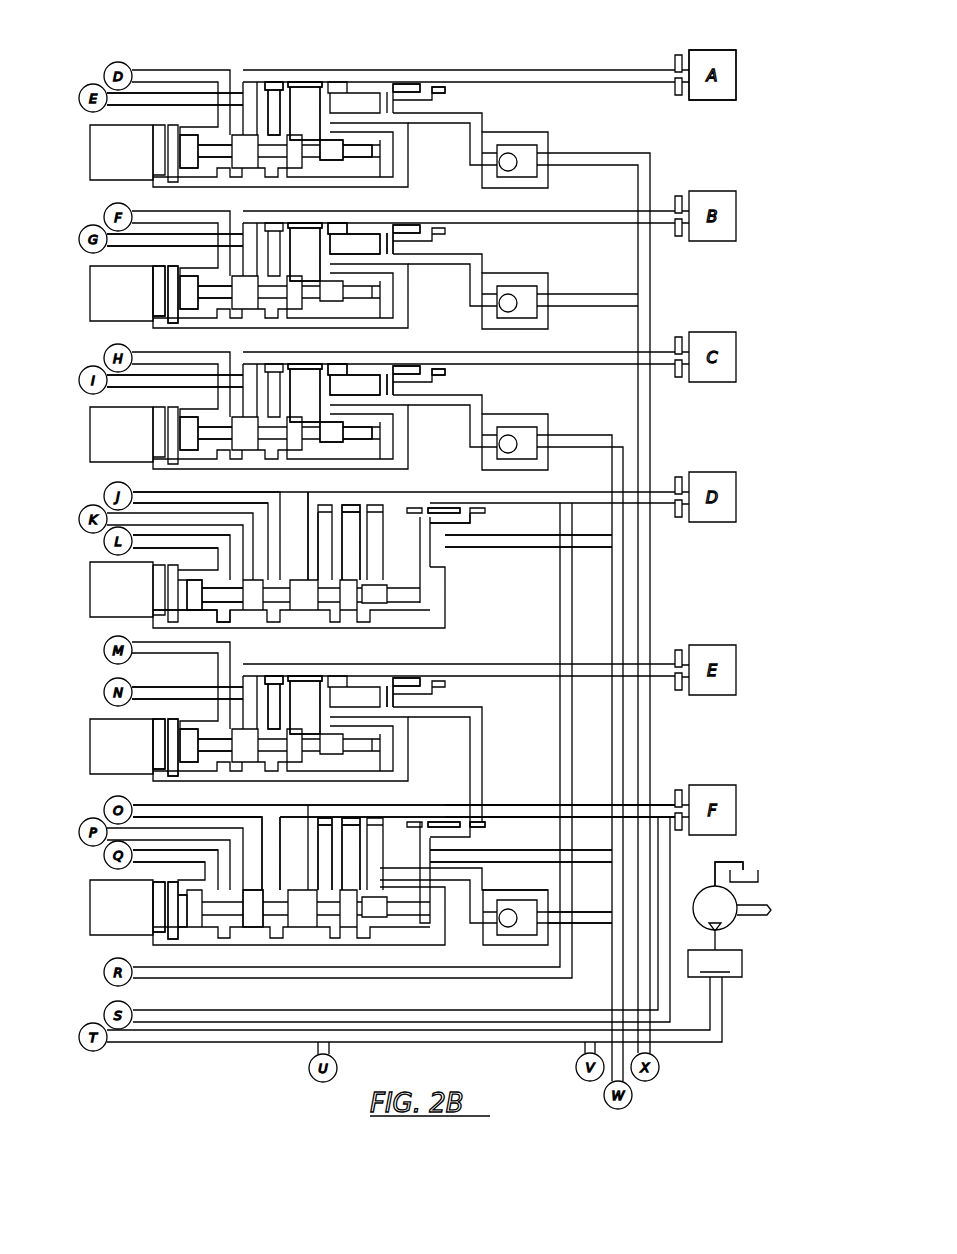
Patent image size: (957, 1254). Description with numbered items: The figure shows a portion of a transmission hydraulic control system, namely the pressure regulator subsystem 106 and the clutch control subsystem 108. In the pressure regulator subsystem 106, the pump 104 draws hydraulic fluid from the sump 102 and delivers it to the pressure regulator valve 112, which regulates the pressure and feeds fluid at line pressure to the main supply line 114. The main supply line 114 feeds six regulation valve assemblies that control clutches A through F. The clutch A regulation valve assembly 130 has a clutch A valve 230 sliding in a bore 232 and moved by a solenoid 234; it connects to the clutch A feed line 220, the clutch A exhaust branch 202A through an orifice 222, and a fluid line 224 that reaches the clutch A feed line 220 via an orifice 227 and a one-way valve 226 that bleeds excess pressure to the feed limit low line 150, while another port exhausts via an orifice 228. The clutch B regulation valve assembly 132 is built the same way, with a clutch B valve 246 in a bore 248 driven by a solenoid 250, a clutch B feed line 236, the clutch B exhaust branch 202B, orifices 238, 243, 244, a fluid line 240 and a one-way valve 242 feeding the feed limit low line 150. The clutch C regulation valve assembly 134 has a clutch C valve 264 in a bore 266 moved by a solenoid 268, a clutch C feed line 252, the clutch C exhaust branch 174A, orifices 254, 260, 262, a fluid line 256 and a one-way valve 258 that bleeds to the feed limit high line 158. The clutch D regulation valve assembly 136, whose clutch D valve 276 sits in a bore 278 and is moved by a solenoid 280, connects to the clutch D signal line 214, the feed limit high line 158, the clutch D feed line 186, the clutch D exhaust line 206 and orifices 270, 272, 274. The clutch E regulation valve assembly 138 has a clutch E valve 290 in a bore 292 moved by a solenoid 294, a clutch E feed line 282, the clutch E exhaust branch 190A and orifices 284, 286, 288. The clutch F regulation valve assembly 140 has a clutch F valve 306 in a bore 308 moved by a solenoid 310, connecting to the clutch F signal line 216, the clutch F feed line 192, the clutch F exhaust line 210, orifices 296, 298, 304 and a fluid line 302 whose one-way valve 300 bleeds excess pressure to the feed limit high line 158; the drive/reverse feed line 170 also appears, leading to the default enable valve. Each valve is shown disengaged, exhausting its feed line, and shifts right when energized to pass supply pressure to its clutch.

The sump 102 is at (762, 876).
The pump 104 is at (735, 928).
The pressure regulator subsystem 106 is at (755, 833).
The clutch control subsystem 108 is at (503, 50).
The pressure regulator valve 112 is at (715, 963).
The main supply line 114 is at (525, 1042).
The clutch A regulation valve assembly 130 is at (410, 155).
The clutch B regulation valve assembly 132 is at (410, 296).
The clutch C regulation valve assembly 134 is at (410, 448).
The clutch D regulation valve assembly 136 is at (465, 603).
The clutch E regulation valve assembly 138 is at (430, 758).
The clutch F regulation valve assembly 140 is at (95, 945).
The feed limit low line 150 is at (655, 415).
The feed limit high line 158 is at (655, 595).
The drive/reverse feed line 170 is at (205, 803).
The clutch C exhaust branch 174A is at (105, 389).
The clutch D feed line 186 is at (475, 492).
The clutch E exhaust branch 190A is at (160, 690).
The clutch F feed line 192 is at (515, 805).
The clutch A exhaust branch 202A is at (164, 92).
The clutch B exhaust branch 202B is at (105, 248).
The clutch D exhaust line 206 is at (165, 492).
The clutch F exhaust line 210 is at (205, 810).
The clutch D signal line 214 is at (150, 545).
The clutch F signal line 216 is at (150, 858).
The clutch A feed line 220 is at (478, 68).
The orifice 222 is at (272, 85).
The fluid line 224 is at (492, 113).
The one-way valve 226 is at (560, 140).
The orifice 227 is at (300, 92).
The orifice 228 is at (405, 85).
The clutch A valve 230 is at (205, 145).
The bore 232 is at (320, 163).
The solenoid 234 is at (105, 152).
The clutch B feed line 236 is at (553, 207).
The orifice 238 is at (300, 228).
The fluid line 240 is at (492, 254).
The one-way valve 242 is at (560, 281).
The orifice 243 is at (340, 235).
The orifice 244 is at (410, 210).
The clutch B valve 246 is at (205, 286).
The bore 248 is at (200, 305).
The solenoid 250 is at (105, 293).
The clutch C feed line 252 is at (553, 348).
The orifice 254 is at (300, 369).
The fluid line 256 is at (492, 395).
The one-way valve 258 is at (560, 422).
The orifice 260 is at (340, 372).
The orifice 262 is at (405, 352).
The clutch C valve 264 is at (205, 427).
The bore 266 is at (350, 430).
The solenoid 268 is at (105, 434).
The orifice 270 is at (310, 505).
The orifice 272 is at (348, 505).
The orifice 274 is at (448, 520).
The clutch D valve 276 is at (215, 607).
The bore 278 is at (190, 600).
The solenoid 280 is at (105, 594).
The clutch E feed line 282 is at (459, 653).
The orifice 284 is at (272, 684).
The orifice 286 is at (330, 684).
The orifice 288 is at (395, 678).
The clutch E valve 290 is at (208, 775).
The bore 292 is at (195, 750).
The solenoid 294 is at (105, 743).
The orifice 296 is at (325, 818).
The orifice 298 is at (388, 806).
The one-way valve 300 is at (548, 899).
The fluid line 302 is at (485, 884).
The orifice 304 is at (440, 820).
The clutch F valve 306 is at (218, 905).
The bore 308 is at (252, 927).
The solenoid 310 is at (105, 909).